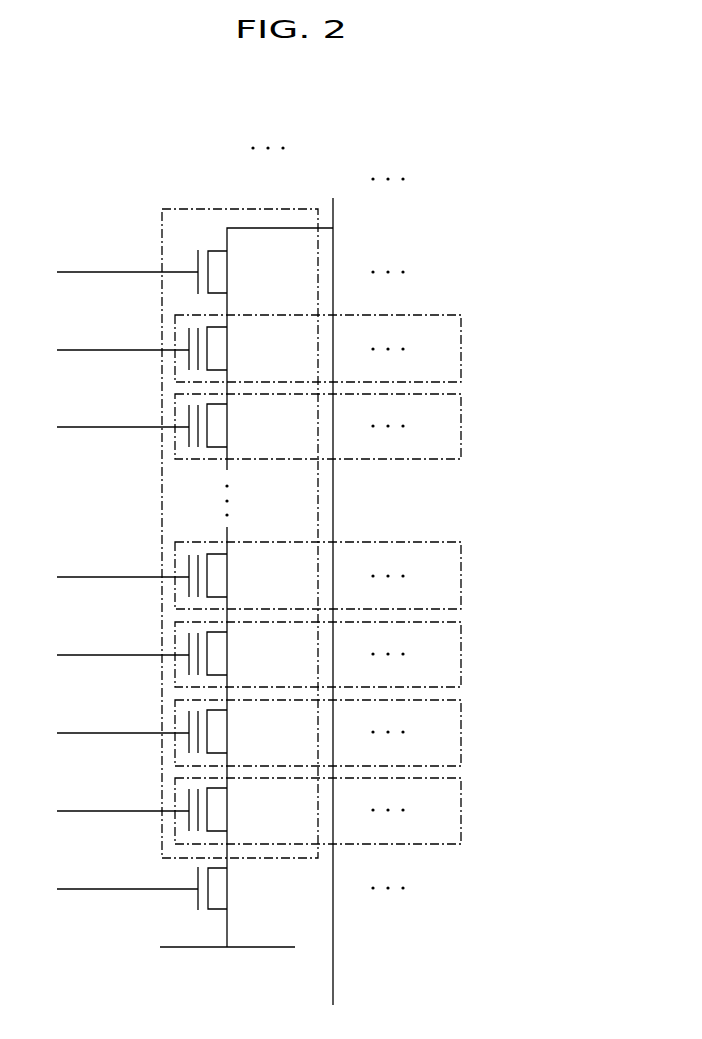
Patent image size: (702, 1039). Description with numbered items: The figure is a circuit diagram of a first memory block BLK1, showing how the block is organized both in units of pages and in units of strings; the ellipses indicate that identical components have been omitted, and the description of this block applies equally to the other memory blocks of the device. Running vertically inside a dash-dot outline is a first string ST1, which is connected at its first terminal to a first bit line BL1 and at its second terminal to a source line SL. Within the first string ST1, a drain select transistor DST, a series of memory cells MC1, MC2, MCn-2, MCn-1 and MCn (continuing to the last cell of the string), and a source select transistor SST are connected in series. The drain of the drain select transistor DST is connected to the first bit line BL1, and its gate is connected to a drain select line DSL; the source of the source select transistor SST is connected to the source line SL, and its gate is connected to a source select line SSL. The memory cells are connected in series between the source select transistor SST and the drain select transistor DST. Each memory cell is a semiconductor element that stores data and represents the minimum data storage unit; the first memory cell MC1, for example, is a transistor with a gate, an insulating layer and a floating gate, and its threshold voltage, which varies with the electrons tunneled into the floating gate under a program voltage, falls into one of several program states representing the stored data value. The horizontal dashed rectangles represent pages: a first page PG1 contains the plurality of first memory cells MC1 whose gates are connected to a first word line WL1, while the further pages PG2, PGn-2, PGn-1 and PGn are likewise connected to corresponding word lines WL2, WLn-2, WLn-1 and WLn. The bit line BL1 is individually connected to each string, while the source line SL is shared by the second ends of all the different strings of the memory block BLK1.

The first memory block BLK1 is at (508, 125).
The first string ST1 is at (238, 198).
The first bit line BL1 is at (361, 587).
The drain select transistor DST is at (301, 272).
The drain select line DSL is at (127, 257).
The source select transistor SST is at (301, 888).
The source select line SSL is at (127, 874).
The source line SL is at (213, 950).
The first memory cell MC1 is at (233, 348).
The memory cell MC2 is at (234, 425).
The memory cell MCn-2 is at (248, 575).
The memory cell MCn-1 is at (247, 653).
The memory cell MCn is at (234, 731).
The first word line WL1 is at (123, 335).
The word line WL2 is at (123, 411).
The word line WLn-2 is at (123, 562).
The word line WLn-1 is at (123, 640).
The word line WLn is at (123, 718).
The first page PG1 is at (461, 343).
The page PG2 is at (461, 420).
The page PGn-2 is at (461, 570).
The page PGn-1 is at (461, 648).
The page PGn is at (461, 726).